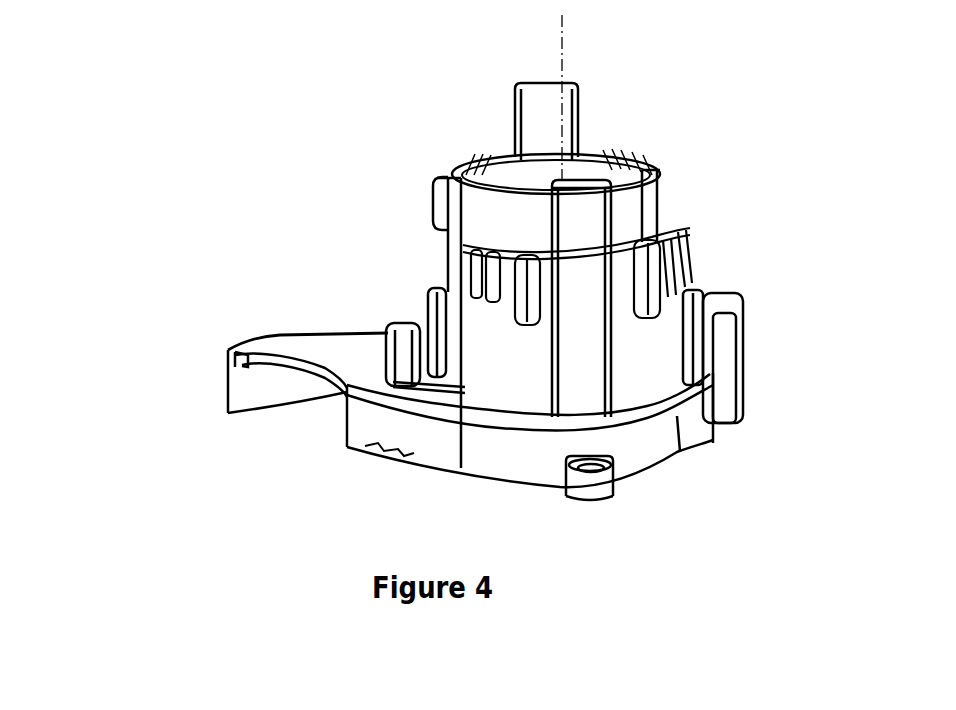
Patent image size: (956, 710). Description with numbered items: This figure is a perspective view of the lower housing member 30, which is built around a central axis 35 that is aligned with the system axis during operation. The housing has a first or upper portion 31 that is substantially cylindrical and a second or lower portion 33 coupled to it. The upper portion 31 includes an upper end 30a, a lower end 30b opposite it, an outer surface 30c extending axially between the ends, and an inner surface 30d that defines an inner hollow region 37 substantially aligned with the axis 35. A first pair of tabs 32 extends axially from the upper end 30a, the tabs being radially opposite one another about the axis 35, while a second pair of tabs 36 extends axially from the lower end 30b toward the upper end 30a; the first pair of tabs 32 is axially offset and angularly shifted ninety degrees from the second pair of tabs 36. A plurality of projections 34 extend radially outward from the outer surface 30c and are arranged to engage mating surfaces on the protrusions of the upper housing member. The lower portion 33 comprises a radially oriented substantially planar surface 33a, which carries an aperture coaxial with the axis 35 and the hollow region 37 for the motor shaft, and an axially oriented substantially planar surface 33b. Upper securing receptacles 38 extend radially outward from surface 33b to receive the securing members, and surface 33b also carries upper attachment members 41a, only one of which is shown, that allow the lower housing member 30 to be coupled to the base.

The lower housing member 30 is at (357, 264).
The upper end 30a is at (620, 149).
The lower end 30b is at (648, 409).
The outer surface 30c is at (667, 342).
The inner surface 30d is at (613, 182).
The upper portion 31 is at (426, 231).
The first pair of tabs 32 is at (548, 204).
The lower portion 33 is at (211, 368).
The radially oriented substantially planar surface 33a is at (278, 338).
The axially oriented substantially planar surface 33b is at (364, 415).
The projections 34 is at (503, 297).
The central axis 35 is at (565, 24).
The second pair of tabs 36 is at (427, 308).
The inner hollow region 37 is at (583, 166).
The upper securing receptacles 38 is at (575, 502).
The upper attachment members 41a is at (381, 457).